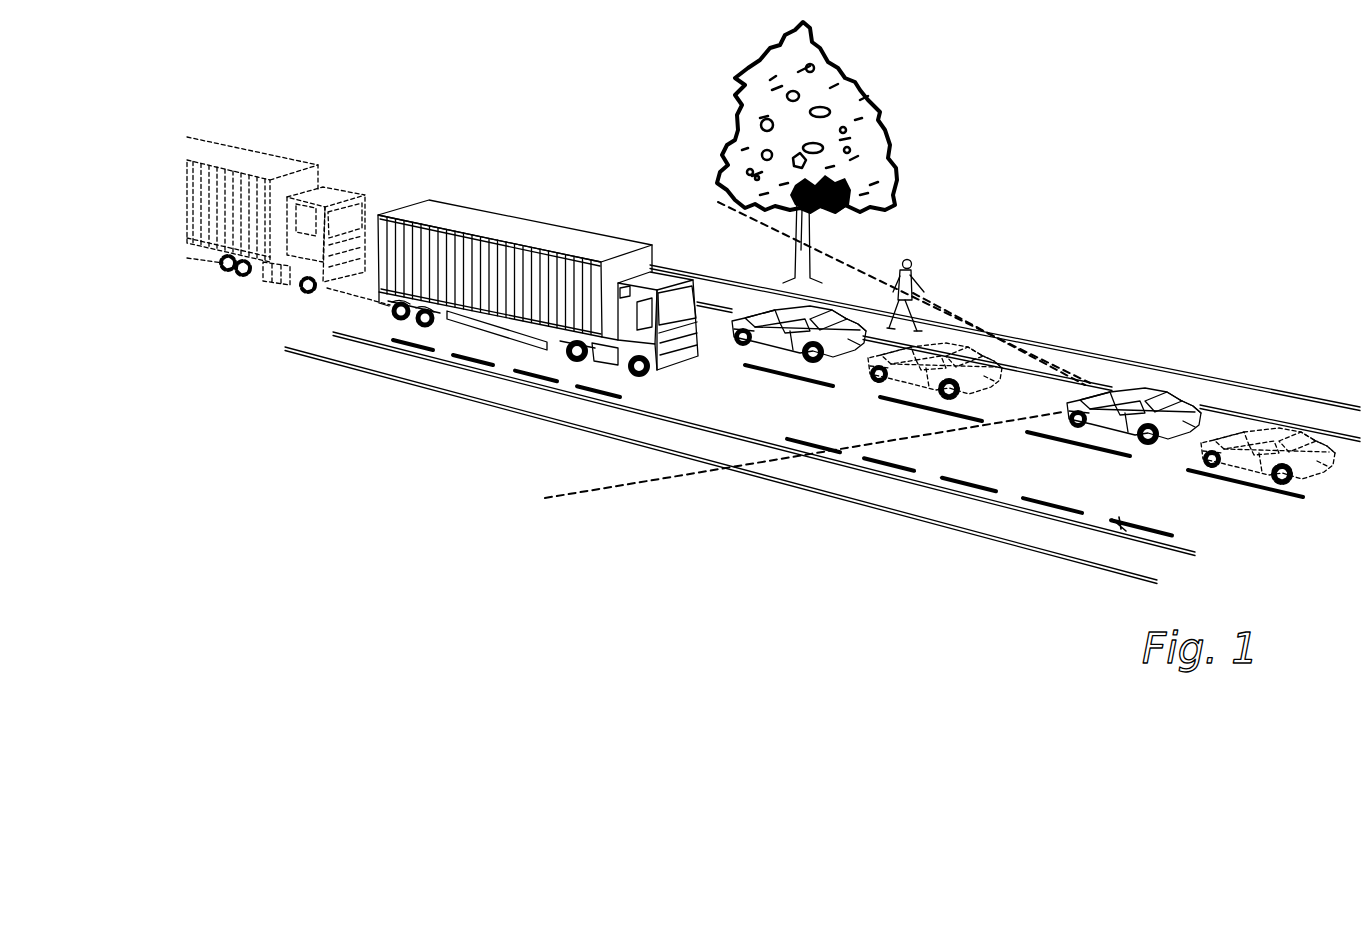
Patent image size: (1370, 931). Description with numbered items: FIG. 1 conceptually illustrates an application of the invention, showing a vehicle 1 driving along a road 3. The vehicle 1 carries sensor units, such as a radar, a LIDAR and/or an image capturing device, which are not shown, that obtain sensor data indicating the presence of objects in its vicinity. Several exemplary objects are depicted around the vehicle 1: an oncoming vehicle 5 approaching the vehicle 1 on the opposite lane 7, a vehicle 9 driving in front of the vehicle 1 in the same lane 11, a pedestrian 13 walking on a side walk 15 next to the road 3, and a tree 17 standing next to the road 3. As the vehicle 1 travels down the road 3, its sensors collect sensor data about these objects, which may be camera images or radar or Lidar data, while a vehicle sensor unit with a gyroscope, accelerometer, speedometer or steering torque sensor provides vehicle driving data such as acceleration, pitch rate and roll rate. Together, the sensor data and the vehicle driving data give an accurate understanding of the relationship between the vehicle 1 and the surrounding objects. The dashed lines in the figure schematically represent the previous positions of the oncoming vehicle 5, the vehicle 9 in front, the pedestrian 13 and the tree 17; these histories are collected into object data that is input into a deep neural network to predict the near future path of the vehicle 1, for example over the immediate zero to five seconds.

The vehicle 1 is at (1187, 393).
The road 3 is at (1232, 505).
The oncoming vehicle 5 is at (595, 232).
The opposite lane 7 is at (548, 365).
The vehicle driving in front 9 is at (758, 300).
The same lane 11 is at (717, 318).
The pedestrian 13 is at (913, 278).
The side walk 15 is at (1092, 370).
The tree 17 is at (883, 158).